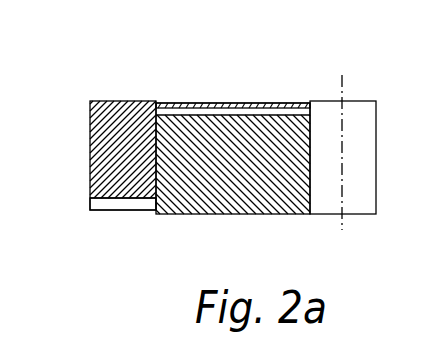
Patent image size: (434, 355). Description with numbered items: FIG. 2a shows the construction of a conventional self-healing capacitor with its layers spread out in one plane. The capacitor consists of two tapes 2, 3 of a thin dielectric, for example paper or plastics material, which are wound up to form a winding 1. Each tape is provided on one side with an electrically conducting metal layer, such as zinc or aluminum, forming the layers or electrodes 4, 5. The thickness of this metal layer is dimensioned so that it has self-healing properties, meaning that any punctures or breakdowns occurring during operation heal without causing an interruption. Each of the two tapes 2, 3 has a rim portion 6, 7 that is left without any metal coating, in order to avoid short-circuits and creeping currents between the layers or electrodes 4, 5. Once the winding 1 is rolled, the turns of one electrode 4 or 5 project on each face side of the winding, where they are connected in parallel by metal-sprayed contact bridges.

The winding 1 is at (359, 127).
The tape 2 is at (176, 221).
The tape 3 is at (113, 93).
The layer or electrode 4 is at (225, 133).
The layer or electrode 5 is at (100, 156).
The rim portion 6 is at (243, 104).
The rim portion 7 is at (99, 245).